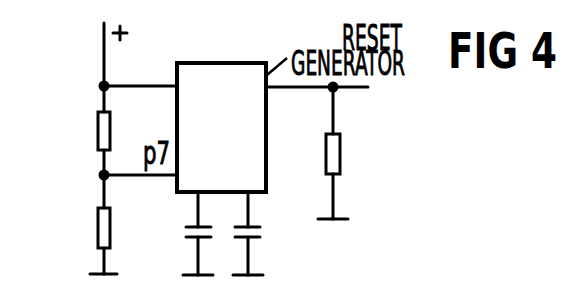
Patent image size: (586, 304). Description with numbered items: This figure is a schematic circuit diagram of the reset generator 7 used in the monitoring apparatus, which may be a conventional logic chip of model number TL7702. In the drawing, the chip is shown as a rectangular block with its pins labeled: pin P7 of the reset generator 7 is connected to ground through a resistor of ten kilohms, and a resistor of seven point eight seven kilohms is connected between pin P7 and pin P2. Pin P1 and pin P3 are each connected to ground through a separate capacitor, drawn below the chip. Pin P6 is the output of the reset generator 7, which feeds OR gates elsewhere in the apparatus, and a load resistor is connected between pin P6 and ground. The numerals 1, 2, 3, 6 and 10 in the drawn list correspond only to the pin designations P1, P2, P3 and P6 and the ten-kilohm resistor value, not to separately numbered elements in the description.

The reset generator 7 is at (233, 105).
The capacitor on pin 1 is at (199, 209).
The 7.87k resistor to pin 2 is at (67, 132).
The capacitor on pin 3 is at (248, 209).
The output resistor on pin 6 is at (290, 143).
The 10k resistor 10 is at (84, 238).